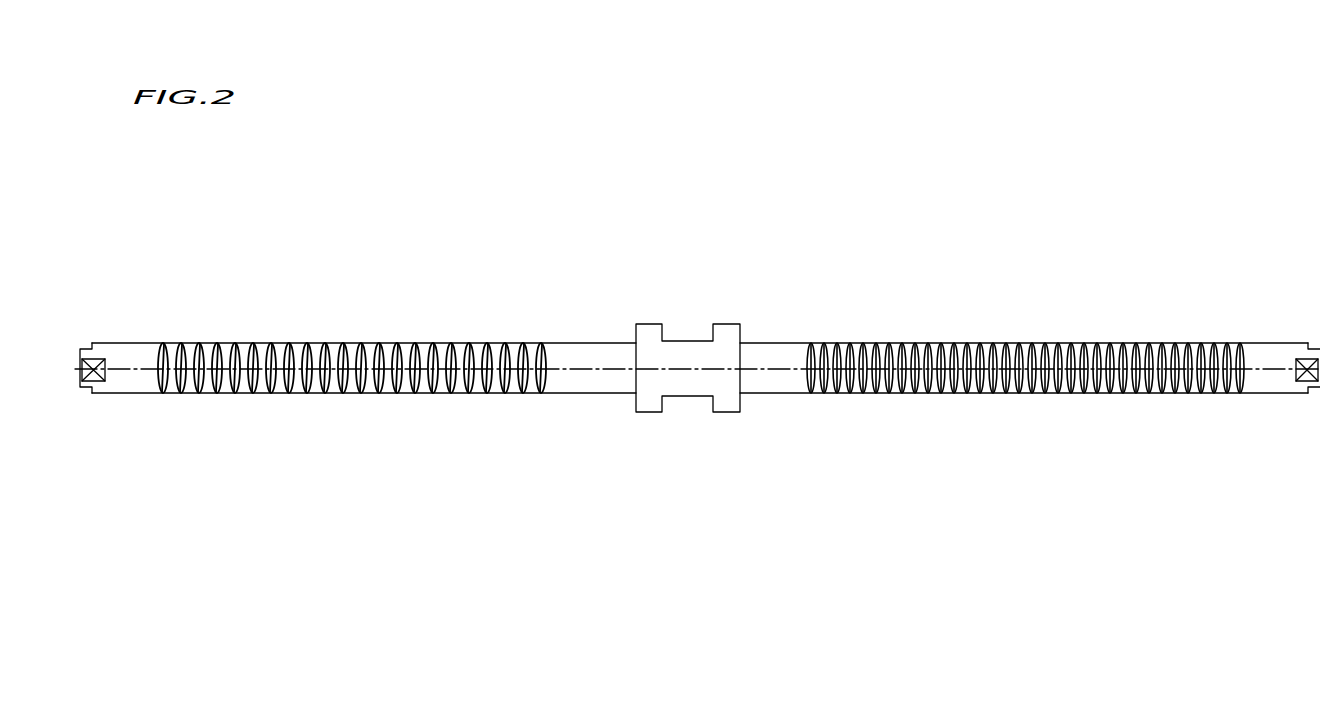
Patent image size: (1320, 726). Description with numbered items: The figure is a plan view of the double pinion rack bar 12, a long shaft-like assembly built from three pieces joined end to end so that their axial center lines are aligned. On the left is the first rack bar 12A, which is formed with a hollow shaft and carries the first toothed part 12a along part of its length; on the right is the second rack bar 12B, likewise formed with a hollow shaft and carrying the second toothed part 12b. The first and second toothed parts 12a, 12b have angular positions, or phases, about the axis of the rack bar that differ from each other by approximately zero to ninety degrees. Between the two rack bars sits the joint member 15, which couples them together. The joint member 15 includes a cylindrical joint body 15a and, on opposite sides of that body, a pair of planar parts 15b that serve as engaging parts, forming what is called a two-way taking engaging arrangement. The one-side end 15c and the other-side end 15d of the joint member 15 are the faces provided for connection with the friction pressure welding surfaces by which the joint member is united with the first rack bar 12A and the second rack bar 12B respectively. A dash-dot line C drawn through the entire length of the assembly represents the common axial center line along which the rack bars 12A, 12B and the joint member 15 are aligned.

The double pinion rack bar 12 is at (700, 328).
The first rack bar 12A is at (352, 336).
The second rack bar 12B is at (1025, 336).
The first toothed part 12a is at (478, 343).
The second toothed part 12b is at (957, 343).
The joint member 15 is at (681, 374).
The joint body 15a is at (697, 385).
The planar parts 15b is at (695, 325).
The one-side end 15c is at (625, 330).
The another-side end 15d is at (750, 328).
The axis / center line C is at (1276, 350).